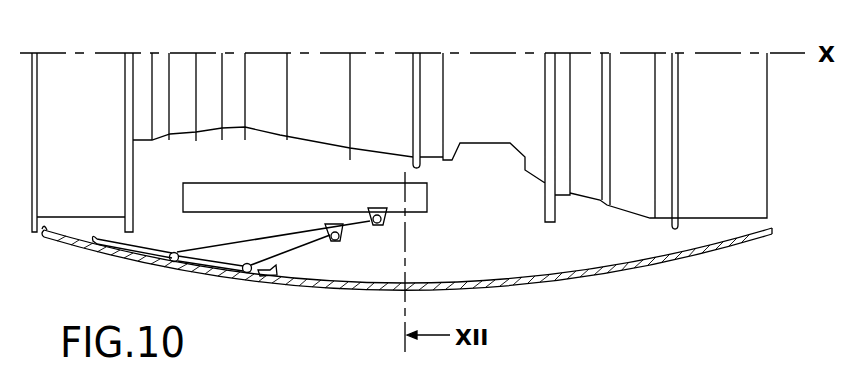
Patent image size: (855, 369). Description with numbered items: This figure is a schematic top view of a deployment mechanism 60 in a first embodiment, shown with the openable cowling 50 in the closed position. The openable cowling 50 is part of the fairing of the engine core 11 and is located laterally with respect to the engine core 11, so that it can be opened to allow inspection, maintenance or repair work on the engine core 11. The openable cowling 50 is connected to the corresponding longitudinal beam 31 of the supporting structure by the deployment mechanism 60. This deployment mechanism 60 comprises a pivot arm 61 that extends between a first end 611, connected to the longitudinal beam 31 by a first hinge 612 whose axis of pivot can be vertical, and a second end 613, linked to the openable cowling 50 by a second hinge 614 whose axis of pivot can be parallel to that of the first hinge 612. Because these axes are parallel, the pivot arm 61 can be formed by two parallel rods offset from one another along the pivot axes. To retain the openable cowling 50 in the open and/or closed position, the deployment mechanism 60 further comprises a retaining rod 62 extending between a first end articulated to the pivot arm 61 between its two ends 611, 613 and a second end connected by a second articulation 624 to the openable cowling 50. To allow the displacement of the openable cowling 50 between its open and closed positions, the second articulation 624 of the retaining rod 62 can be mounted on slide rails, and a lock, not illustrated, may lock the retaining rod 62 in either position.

The engine core 11 is at (488, 72).
The longitudinal beam 31 is at (257, 193).
The openable cowling 50 is at (577, 280).
The deployment mechanism 60 is at (277, 270).
The pivot arm 61 is at (247, 243).
The retaining rod 62 is at (293, 256).
The first end 611 is at (355, 225).
The first hinge 612 is at (386, 228).
The second end 613 is at (195, 273).
The second hinge 614 is at (176, 263).
The second articulation 624 is at (247, 276).